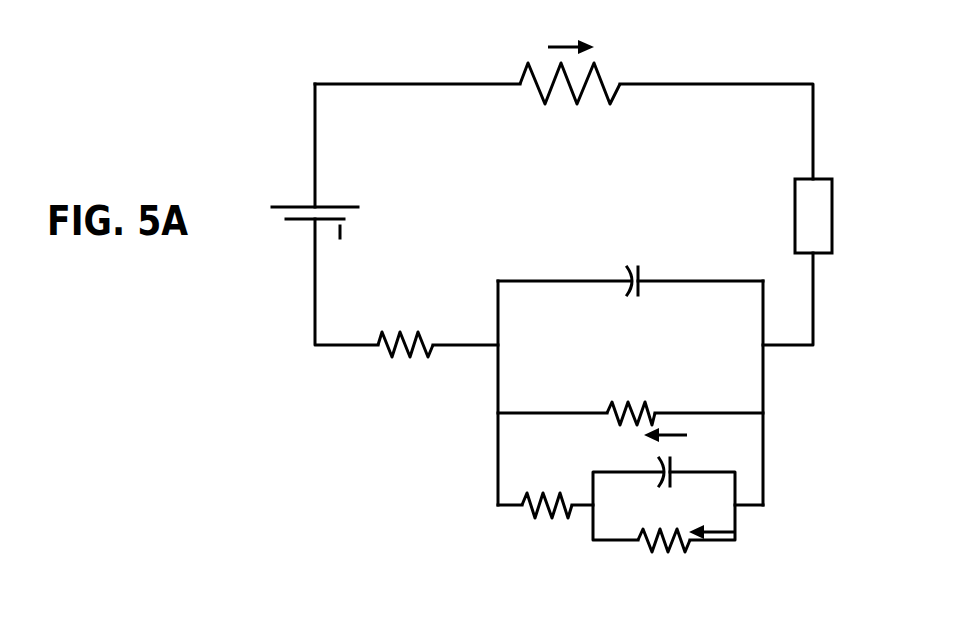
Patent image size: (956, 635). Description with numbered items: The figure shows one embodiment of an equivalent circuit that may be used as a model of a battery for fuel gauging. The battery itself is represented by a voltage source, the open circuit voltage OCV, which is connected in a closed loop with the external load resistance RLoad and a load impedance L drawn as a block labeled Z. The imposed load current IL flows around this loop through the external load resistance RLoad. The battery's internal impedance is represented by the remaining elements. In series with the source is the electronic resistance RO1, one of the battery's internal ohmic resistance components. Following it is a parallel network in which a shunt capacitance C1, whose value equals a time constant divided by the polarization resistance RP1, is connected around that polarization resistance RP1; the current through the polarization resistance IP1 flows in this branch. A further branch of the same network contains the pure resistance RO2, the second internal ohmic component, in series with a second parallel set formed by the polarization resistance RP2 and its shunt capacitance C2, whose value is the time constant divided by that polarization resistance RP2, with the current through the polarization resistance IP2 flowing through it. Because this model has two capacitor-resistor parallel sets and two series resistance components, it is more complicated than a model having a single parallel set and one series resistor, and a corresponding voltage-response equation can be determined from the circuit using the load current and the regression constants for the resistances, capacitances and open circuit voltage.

The open circuit voltage OCV is at (341, 197).
The external load resistance RLoad is at (570, 101).
The imposed load current IL is at (571, 33).
The load impedance L is at (829, 214).
The electronic resistance RO1 is at (426, 324).
The shunt capacitance around polarization resistance C1 is at (666, 249).
The polarization resistance RP1 is at (631, 398).
The current through the polarization resistance IP1 is at (690, 433).
The shunt capacitance around polarization resistance C2 is at (614, 458).
The pure resistance RO2 is at (547, 489).
The polarization resistance RP2 is at (664, 527).
The current through the polarization resistance IP2 is at (711, 552).